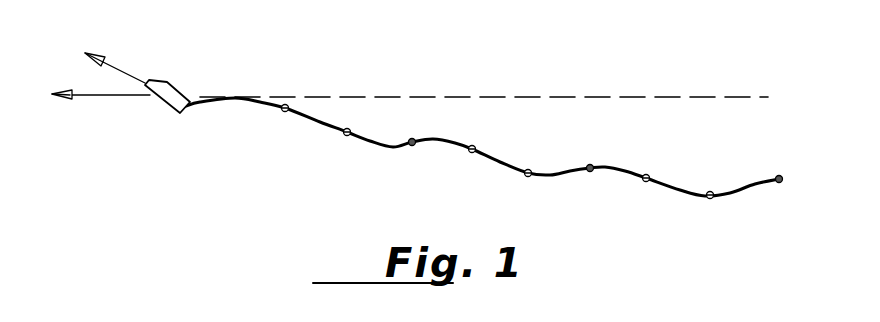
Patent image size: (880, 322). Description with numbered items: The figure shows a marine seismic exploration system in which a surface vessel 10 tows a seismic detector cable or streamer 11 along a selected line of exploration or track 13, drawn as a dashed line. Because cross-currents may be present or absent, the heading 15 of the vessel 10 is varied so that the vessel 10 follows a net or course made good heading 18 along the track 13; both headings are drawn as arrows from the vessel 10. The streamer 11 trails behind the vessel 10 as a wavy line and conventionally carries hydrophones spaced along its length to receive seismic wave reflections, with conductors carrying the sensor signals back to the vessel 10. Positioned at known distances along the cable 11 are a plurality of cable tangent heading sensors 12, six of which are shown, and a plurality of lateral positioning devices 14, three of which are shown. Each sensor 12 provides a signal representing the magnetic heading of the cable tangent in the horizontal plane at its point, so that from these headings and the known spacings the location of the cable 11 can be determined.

The surface vessel 10 is at (202, 58).
The seismic detector cable or streamer 11 is at (220, 153).
The cable tangent heading sensors 12 is at (344, 134).
The line of exploration or track 13 is at (465, 54).
The lateral positioning devices 14 is at (410, 146).
The heading 15 is at (145, 33).
The course made good heading 18 is at (104, 140).